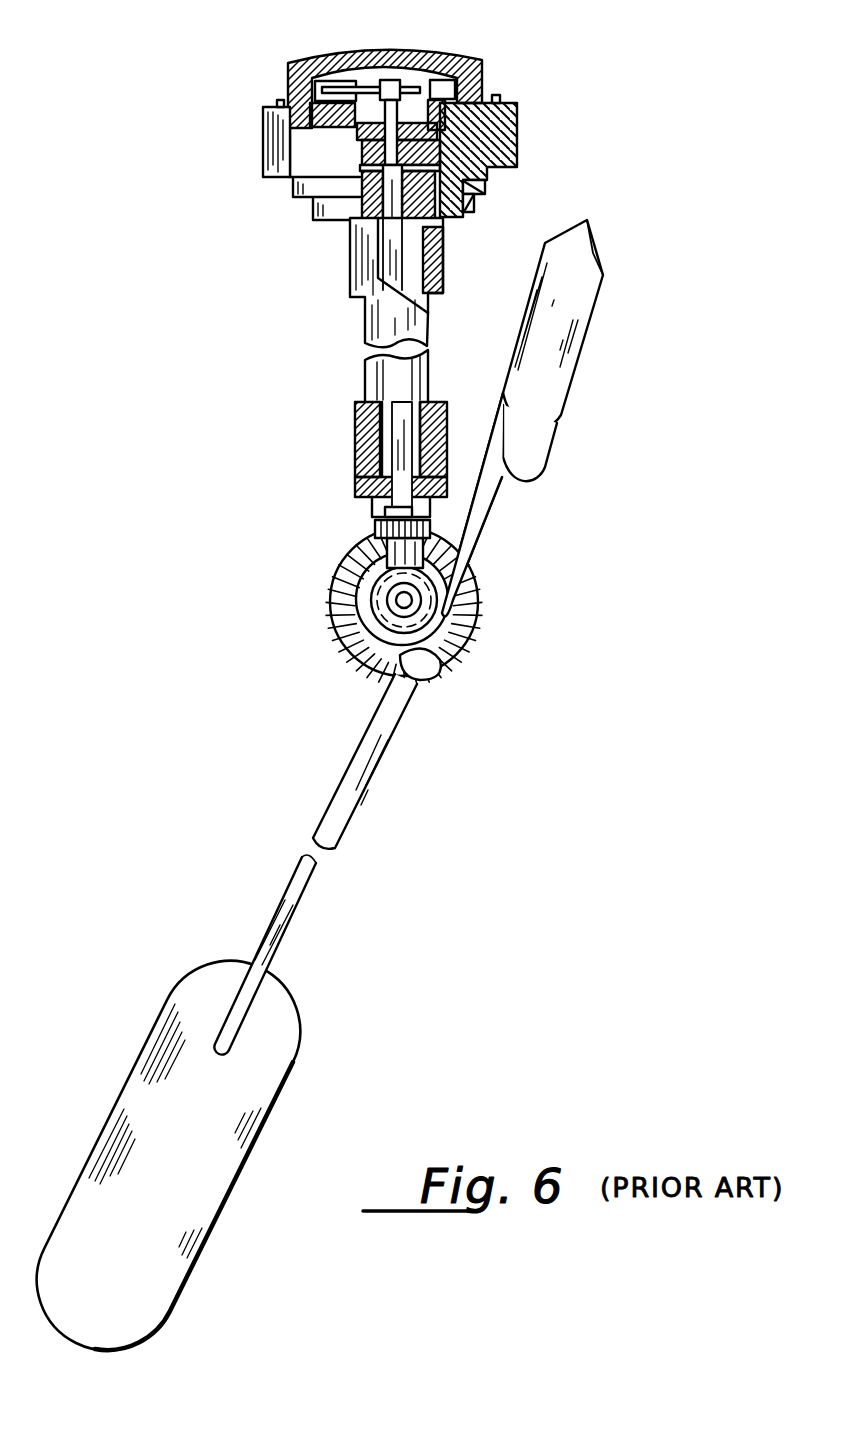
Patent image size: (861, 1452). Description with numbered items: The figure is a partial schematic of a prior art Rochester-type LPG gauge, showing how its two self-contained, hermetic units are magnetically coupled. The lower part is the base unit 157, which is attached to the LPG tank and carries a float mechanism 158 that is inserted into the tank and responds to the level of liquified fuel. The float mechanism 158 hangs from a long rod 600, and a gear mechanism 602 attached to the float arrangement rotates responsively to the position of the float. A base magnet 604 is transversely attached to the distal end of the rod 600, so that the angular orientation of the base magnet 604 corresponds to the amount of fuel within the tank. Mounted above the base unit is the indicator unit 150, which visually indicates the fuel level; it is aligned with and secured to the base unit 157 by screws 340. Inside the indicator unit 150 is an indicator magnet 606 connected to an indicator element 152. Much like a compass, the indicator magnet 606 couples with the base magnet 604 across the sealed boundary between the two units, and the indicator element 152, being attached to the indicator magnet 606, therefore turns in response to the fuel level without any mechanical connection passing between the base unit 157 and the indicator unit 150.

The indicator unit 150 is at (300, 65).
The indicator element 152 is at (368, 84).
The indicator magnet 606 is at (430, 102).
The screws 340 is at (280, 102).
The base magnet 604 is at (480, 193).
The base unit 157 is at (350, 258).
The rod 600 is at (397, 407).
The gear mechanism 602 is at (337, 587).
The float mechanism 158 is at (291, 1014).